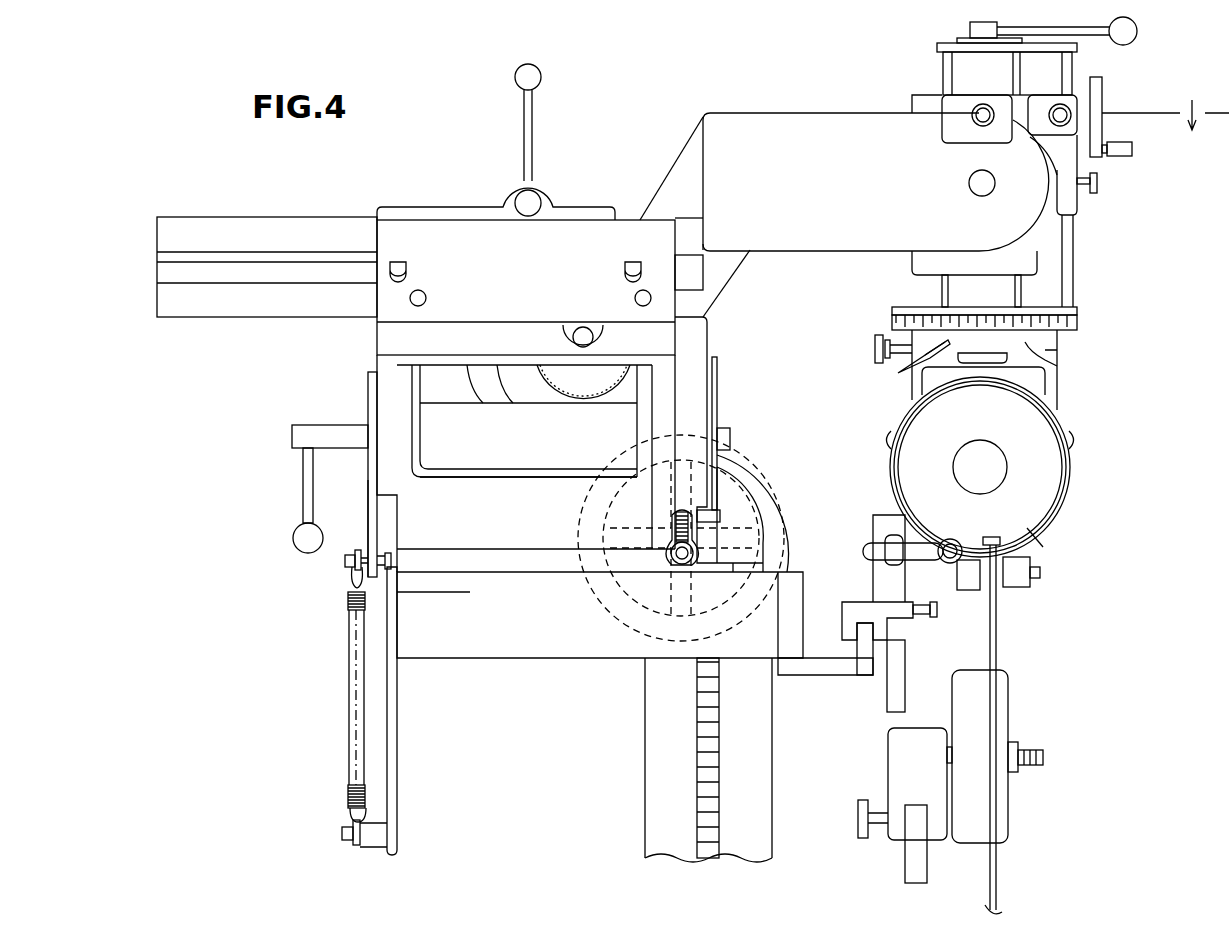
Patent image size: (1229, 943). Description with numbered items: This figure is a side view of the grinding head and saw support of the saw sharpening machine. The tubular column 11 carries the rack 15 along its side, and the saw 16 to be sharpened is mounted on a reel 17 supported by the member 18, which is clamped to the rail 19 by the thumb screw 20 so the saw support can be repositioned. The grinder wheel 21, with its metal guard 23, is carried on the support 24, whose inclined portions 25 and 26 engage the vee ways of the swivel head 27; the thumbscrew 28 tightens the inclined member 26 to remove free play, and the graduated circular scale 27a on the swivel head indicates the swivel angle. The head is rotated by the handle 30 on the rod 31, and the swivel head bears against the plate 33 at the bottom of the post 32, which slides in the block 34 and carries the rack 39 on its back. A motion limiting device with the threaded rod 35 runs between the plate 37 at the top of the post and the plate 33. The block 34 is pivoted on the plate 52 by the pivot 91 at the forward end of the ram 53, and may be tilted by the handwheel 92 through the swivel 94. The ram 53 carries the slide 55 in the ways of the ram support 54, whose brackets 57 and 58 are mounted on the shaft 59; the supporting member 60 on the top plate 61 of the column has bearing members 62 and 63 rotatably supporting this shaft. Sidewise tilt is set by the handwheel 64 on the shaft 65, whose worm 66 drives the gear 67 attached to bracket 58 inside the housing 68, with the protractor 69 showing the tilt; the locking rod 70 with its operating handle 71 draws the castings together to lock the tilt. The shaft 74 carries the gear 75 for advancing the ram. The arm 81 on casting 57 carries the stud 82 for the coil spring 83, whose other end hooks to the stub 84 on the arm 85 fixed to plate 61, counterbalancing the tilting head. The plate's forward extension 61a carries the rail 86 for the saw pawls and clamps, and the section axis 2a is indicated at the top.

The tubular column 11 is at (650, 782).
The rack 15 is at (703, 727).
The circular saw 16 is at (996, 662).
The reel 17 is at (1035, 765).
The member 18 is at (890, 760).
The rail 19 is at (905, 876).
The thumb screw 20 is at (858, 816).
The grinder wheel 21 is at (1030, 535).
The metal guard 23 is at (1073, 480).
The support 24 is at (1050, 388).
The inclined portion 25 is at (1052, 352).
The inwardly inclined member 26 is at (902, 372).
The swivel head 27 is at (1052, 365).
The graduated circular scale 27a is at (1078, 325).
The thumbscrew 28 is at (873, 350).
The handle 30 is at (1138, 33).
The rod 31 is at (968, 30).
The post 32 is at (1010, 300).
The plate 33 is at (1073, 309).
The block 34 is at (912, 108).
The threaded rod 35 is at (1068, 256).
The plate 37 is at (1080, 57).
The rack 39 is at (942, 72).
The plate 52 is at (790, 127).
The ram 53 is at (270, 222).
The ram support 54 is at (440, 228).
The slide 55 is at (165, 271).
The bracket 57 is at (377, 393).
The bracket 58 is at (668, 412).
The shaft 59 is at (510, 466).
The supporting member 60 is at (548, 528).
The top plate 61 is at (532, 655).
The forward extension 61a is at (835, 672).
The bearing member 62 is at (415, 445).
The bearing member 63 is at (637, 435).
The handwheel 64 is at (783, 514).
The shaft 65 is at (672, 553).
The worm 66 is at (690, 575).
The gear 67 is at (700, 533).
The housing 68 is at (703, 351).
The protractor 69 is at (720, 420).
The locking rod 70 is at (300, 425).
The operating handle 71 is at (305, 492).
The shaft 74 is at (583, 327).
The gear 75 is at (562, 392).
The arm 81 is at (372, 490).
The stud 82 is at (346, 563).
The coil spring 83 is at (350, 672).
The stub 84 is at (365, 850).
The arm 85 is at (397, 762).
The rail 86 is at (866, 650).
The pivot 91 is at (978, 193).
The handwheel 92 is at (1112, 135).
The swivel 94 is at (1068, 118).
The section axis 2a is at (1165, 102).